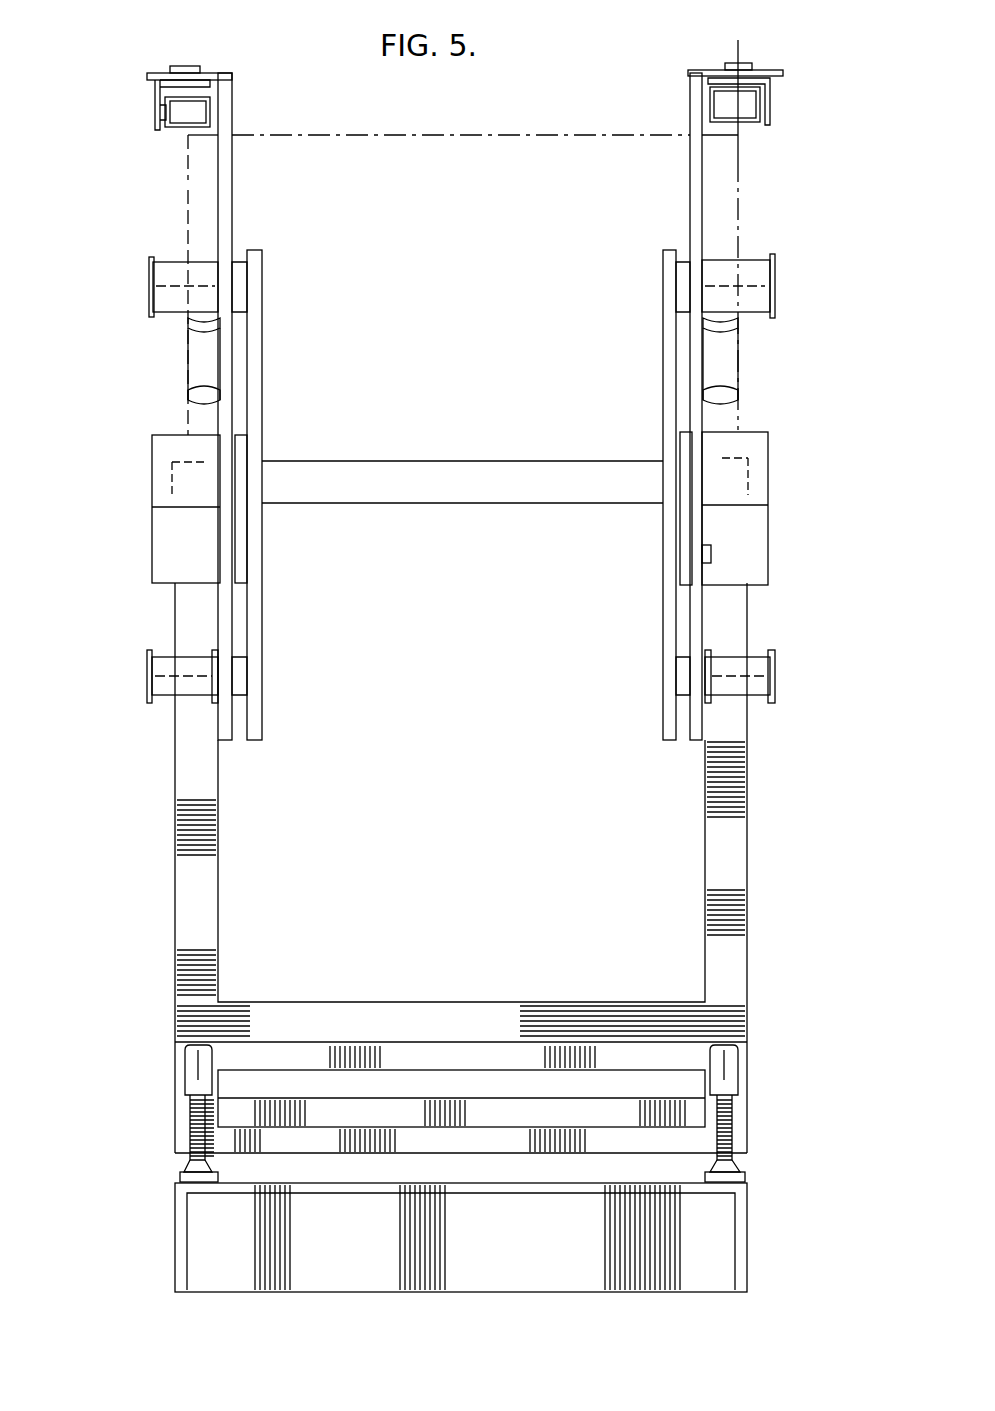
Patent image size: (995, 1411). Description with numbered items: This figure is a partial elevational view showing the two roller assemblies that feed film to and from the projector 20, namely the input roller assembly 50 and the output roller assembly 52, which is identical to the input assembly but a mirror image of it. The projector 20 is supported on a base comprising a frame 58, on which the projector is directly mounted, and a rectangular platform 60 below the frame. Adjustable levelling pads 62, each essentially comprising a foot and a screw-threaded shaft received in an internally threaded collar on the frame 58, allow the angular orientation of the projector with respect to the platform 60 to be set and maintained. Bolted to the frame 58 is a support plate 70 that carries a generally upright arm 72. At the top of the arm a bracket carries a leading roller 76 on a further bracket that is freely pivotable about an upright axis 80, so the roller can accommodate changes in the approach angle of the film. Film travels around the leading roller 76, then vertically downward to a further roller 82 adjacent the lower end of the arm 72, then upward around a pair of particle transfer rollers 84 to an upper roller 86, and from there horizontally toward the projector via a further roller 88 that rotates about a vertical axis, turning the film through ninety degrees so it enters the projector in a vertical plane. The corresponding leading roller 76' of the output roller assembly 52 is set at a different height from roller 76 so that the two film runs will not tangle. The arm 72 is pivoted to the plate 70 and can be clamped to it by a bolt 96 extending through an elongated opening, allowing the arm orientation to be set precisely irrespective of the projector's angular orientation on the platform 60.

The projector 20 is at (485, 128).
The input roller assembly 50 is at (745, 30).
The output roller assembly 52 is at (170, 48).
The frame 58 is at (762, 878).
The platform 60 is at (738, 1235).
The adjustable levelling pad 62 is at (180, 1163).
The support plate 70 is at (660, 604).
The upright arm 72 is at (686, 196).
The leading roller 76 is at (765, 131).
The leading roller of output roller assembly 76' is at (161, 149).
The upright axis 80 is at (737, 47).
The further roller 82 is at (750, 676).
The particle transfer rollers 84 is at (750, 508).
The upper roller 86 is at (740, 298).
The further roller 88 is at (718, 356).
The bolt 96 is at (712, 553).